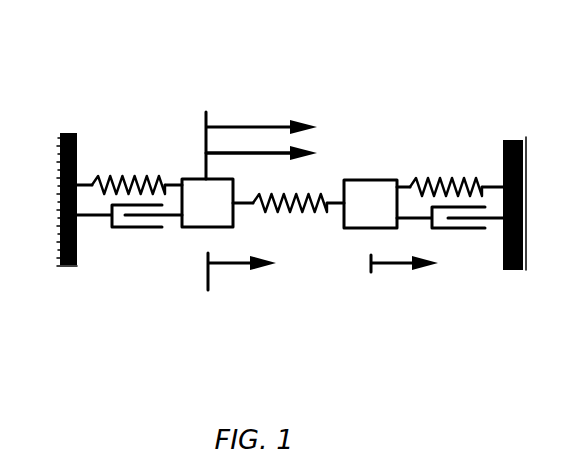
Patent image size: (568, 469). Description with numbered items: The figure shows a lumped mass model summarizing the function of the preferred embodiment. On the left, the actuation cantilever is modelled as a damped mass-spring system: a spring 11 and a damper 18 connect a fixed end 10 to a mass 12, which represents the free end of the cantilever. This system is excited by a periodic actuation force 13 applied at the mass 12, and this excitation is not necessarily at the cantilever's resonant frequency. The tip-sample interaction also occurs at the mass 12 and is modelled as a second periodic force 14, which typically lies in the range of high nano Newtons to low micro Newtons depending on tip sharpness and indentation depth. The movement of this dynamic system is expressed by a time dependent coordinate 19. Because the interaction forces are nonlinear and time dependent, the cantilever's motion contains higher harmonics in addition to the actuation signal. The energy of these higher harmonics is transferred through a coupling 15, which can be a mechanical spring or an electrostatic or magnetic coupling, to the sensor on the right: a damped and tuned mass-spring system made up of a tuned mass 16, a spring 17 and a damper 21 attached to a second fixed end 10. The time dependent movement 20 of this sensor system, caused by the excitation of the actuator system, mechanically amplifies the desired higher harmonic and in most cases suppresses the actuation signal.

The fixed end 10 is at (67, 133).
The spring 11 is at (125, 165).
The mass 12 is at (207, 203).
The periodic actuation force 13 is at (262, 123).
The periodic force 14 is at (268, 152).
The coupling 15 is at (297, 190).
The tuned mass 16 is at (370, 204).
The spring 17 is at (448, 177).
The damper 18 is at (128, 228).
The time dependent coordinate 19 is at (208, 290).
The time dependent movement 20 is at (371, 272).
The damper 21 is at (450, 232).